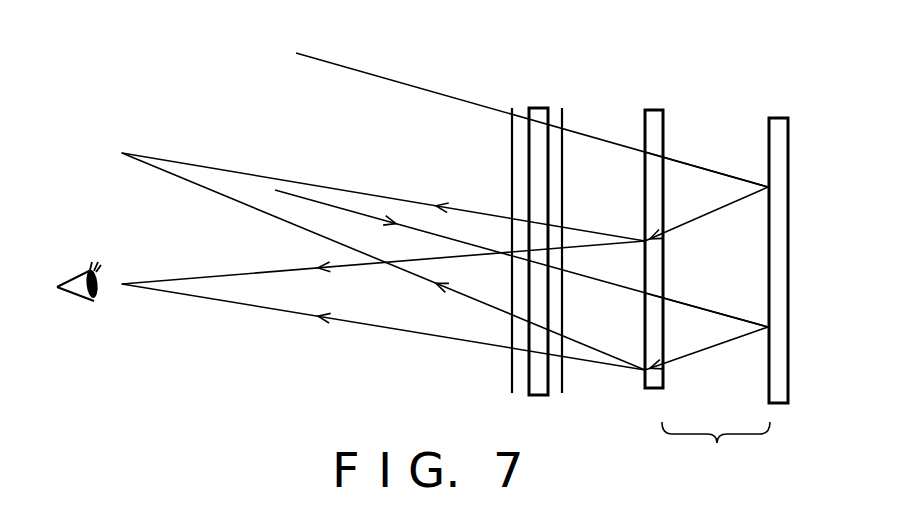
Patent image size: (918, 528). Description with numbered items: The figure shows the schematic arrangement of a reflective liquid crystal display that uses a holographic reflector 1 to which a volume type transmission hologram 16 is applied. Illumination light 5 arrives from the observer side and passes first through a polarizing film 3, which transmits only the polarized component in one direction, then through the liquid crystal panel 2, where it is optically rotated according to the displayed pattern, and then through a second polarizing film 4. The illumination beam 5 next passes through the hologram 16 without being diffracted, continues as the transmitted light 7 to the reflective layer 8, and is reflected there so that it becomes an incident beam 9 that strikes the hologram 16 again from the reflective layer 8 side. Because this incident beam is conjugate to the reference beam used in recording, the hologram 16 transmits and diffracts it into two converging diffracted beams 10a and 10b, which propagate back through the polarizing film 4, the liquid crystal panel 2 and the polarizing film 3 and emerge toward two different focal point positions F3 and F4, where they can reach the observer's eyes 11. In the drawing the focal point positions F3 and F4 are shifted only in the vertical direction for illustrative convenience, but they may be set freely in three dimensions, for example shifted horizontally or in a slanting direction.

The holographic reflector 1 is at (716, 452).
The liquid crystal panel 2 is at (537, 107).
The polarizing film 3 is at (510, 107).
The polarizing film 4 is at (562, 106).
The illumination light 5 is at (414, 86).
The light transmitted toward reflector 7 is at (705, 168).
The reflective layer 8 is at (778, 117).
The incident beam 9 is at (730, 207).
The converging diffracted beam 10a is at (247, 273).
The converging diffracted beam 10b is at (413, 201).
The observer's eyes 11 is at (81, 304).
The volume type transmission hologram 16 is at (650, 108).
The focal point position F3 is at (122, 152).
The focal point position F4 is at (122, 283).